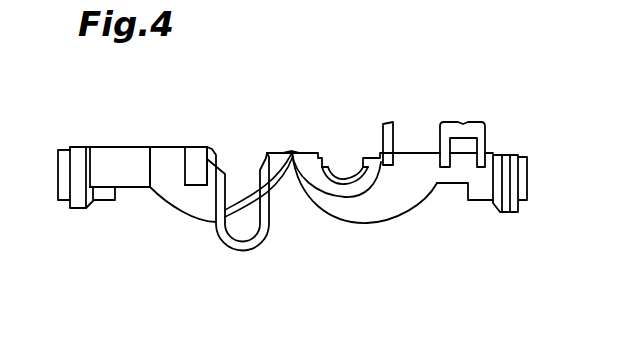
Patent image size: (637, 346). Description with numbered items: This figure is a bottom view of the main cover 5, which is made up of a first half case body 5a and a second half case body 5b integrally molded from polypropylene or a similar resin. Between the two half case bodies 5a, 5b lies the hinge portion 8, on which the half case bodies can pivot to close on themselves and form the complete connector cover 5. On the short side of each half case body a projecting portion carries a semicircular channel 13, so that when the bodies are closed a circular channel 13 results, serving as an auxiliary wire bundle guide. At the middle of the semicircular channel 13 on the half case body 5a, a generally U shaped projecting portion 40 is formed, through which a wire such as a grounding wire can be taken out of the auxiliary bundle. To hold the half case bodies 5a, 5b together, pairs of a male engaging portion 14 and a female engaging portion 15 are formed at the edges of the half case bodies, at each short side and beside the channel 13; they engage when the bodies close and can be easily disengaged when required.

The main cover 5 is at (360, 225).
The first half case body 5a is at (173, 193).
The second half case body 5b is at (403, 213).
The hinge portion 8 is at (292, 152).
The semicircular channel 13 is at (337, 182).
The male engaging portion 14 is at (384, 123).
The female engaging portion 15 is at (120, 160).
The U shaped projecting portion 40 is at (242, 251).